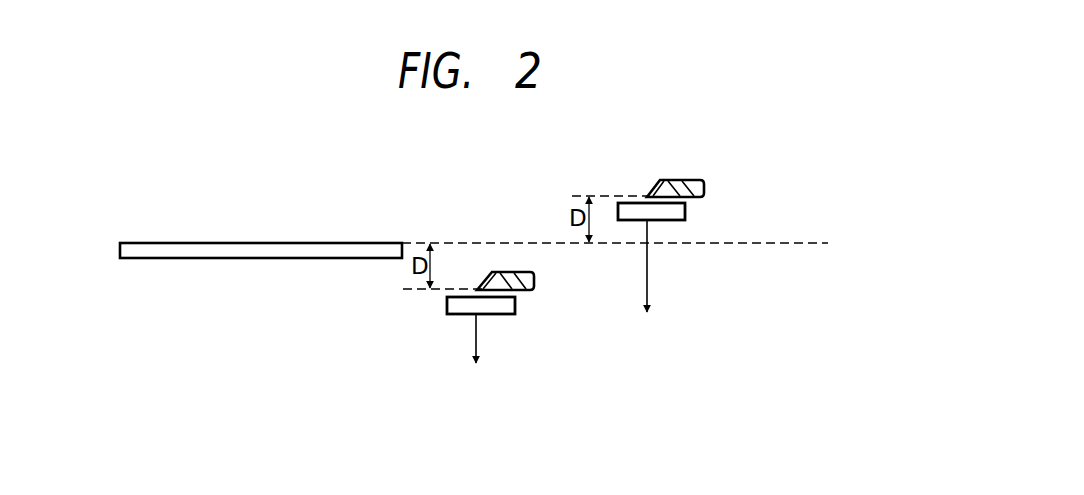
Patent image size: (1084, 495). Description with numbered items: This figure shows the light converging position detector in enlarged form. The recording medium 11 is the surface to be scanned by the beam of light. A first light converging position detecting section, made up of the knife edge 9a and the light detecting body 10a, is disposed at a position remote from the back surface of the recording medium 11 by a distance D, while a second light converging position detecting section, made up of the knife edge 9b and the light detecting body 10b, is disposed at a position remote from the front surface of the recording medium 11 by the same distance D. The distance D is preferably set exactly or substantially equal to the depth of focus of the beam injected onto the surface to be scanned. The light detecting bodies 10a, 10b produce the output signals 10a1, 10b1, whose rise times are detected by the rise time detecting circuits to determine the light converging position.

The recording medium 11 is at (335, 243).
The knife edge 9a is at (480, 287).
The knife edge 9b is at (680, 178).
The light detecting body 10a is at (495, 316).
The light detecting body 10b is at (665, 214).
The output signal 10a1 is at (474, 333).
The output signal 10b1 is at (647, 277).